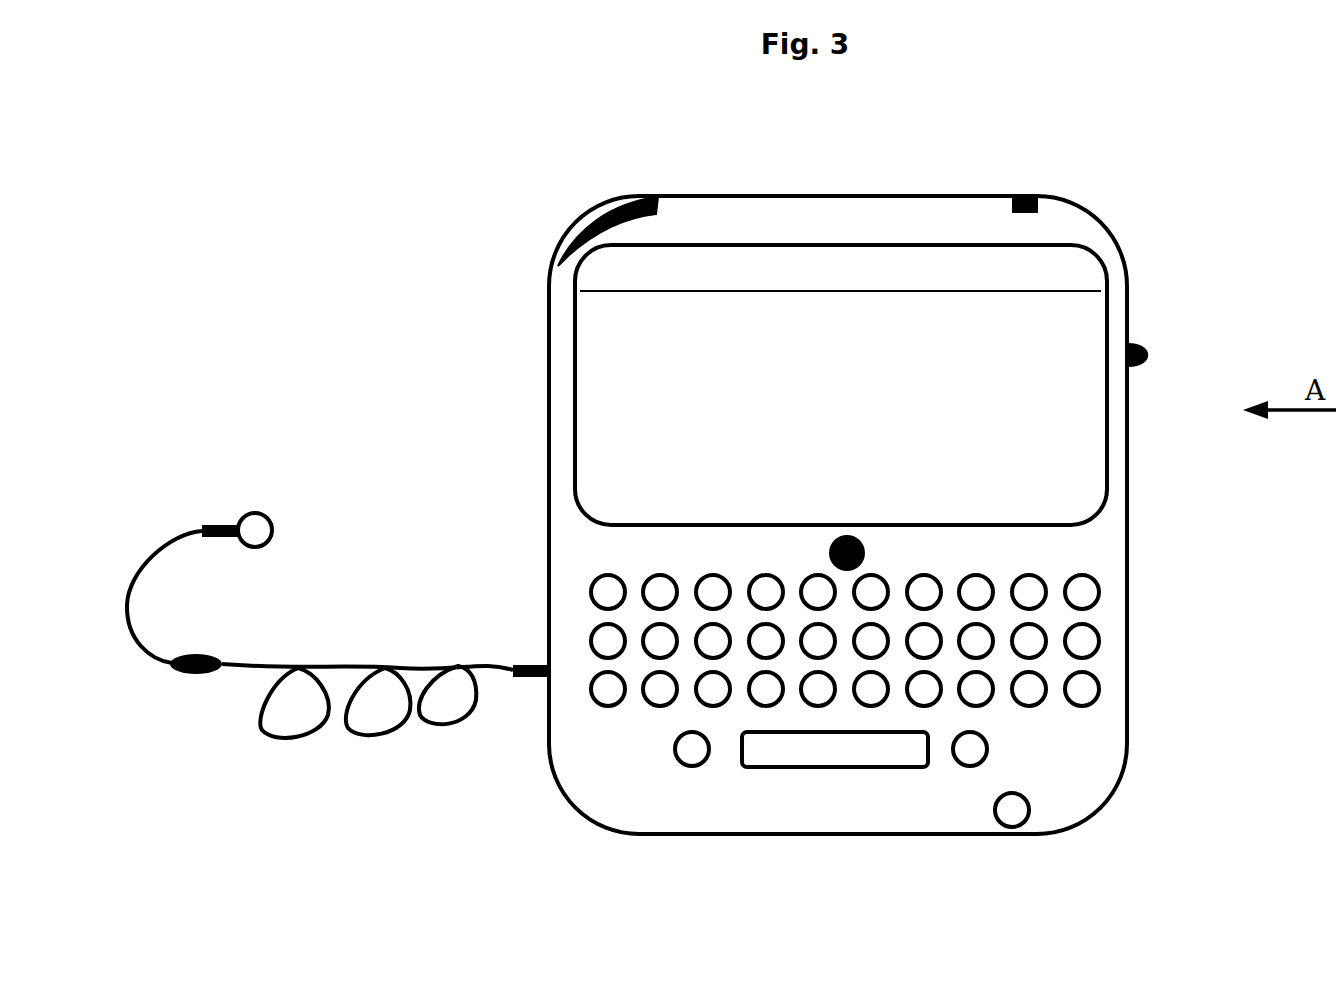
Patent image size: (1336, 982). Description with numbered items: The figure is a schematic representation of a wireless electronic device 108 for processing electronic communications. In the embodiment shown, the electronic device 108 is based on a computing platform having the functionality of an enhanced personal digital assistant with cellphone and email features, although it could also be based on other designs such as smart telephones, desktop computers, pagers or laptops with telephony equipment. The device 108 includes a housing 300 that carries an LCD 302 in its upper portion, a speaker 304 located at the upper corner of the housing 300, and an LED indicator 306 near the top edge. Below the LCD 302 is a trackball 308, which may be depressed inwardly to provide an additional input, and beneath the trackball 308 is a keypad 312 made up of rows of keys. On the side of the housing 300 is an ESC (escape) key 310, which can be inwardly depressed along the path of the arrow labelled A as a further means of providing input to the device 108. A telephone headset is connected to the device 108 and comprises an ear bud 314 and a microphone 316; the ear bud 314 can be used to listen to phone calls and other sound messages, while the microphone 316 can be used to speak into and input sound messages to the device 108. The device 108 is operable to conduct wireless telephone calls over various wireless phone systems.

The electronic device 108 is at (803, 857).
The housing 300 is at (1056, 813).
The LCD 302 is at (588, 514).
The speaker 304 is at (578, 220).
The LED indicator 306 is at (1040, 207).
The trackball 308 is at (878, 558).
The ESC key 310 is at (1150, 358).
The keypad 312 is at (1115, 648).
The ear bud 314 is at (290, 523).
The microphone 316 is at (232, 650).